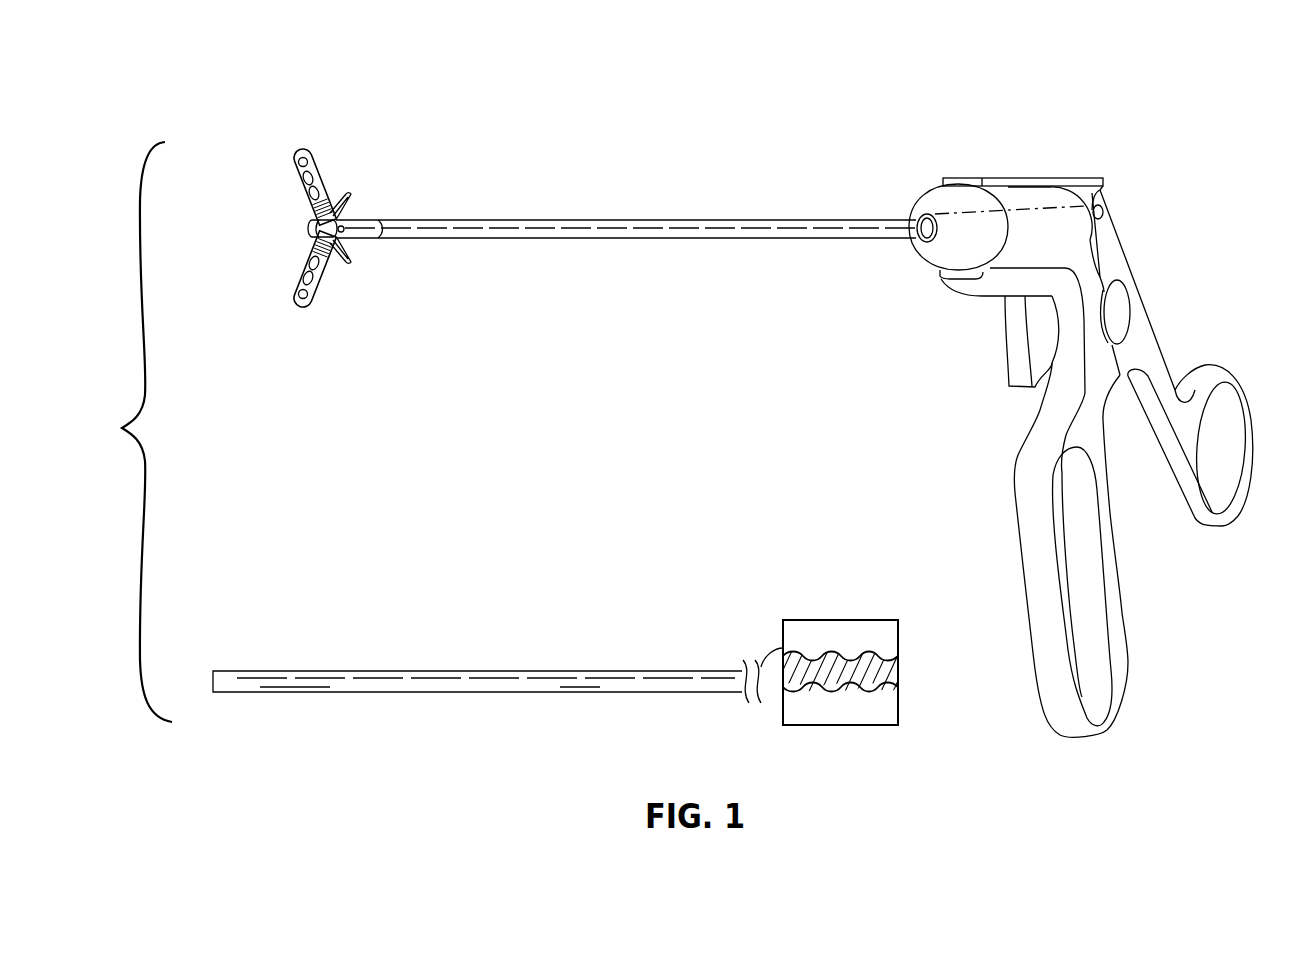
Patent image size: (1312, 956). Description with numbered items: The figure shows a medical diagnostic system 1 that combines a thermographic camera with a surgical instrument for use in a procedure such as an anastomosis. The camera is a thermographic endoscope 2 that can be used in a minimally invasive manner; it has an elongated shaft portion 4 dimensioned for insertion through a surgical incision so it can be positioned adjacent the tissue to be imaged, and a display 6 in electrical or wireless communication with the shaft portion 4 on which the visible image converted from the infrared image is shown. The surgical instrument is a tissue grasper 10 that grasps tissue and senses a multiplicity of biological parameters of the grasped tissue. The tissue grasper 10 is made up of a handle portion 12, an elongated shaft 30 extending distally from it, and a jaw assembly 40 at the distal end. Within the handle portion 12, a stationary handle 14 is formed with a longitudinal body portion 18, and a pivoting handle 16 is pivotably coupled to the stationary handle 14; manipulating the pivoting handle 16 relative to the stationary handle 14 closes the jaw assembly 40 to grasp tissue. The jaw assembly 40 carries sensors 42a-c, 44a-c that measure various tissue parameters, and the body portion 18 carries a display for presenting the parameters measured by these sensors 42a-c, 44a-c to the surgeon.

The medical diagnostic system 1 is at (139, 432).
The tissue grasper 10 is at (755, 128).
The handle portion 12 is at (1113, 165).
The stationary handle 14 is at (1030, 547).
The pivoting handle 16 is at (1233, 383).
The longitudinal body portion 18 is at (937, 193).
The elongated shaft 30 is at (634, 246).
The jaw assembly 40 is at (347, 167).
The sensors 42a-c is at (297, 162).
The sensors 44a-c is at (297, 293).
The thermographic endoscope 2 is at (745, 578).
The shaft portion 4 is at (398, 669).
The display 6 is at (802, 620).